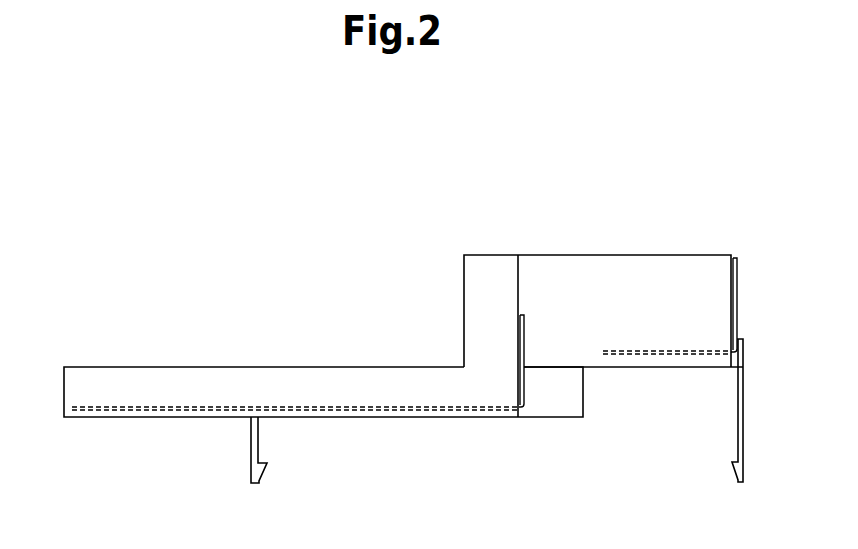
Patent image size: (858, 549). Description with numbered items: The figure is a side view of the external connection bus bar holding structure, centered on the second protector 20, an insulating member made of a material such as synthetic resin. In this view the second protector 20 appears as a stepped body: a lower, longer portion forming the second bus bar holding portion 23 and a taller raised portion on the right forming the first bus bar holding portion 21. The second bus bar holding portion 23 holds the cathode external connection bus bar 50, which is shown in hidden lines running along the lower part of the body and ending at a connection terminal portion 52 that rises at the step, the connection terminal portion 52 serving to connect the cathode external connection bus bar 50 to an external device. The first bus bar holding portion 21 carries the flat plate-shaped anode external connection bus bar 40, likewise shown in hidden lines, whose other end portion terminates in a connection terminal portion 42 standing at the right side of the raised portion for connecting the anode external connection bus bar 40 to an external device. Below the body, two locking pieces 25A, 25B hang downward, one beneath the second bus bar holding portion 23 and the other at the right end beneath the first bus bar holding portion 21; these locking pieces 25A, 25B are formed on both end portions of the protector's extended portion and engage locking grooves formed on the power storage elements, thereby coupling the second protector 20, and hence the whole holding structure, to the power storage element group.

The second protector 20 is at (484, 250).
The first bus bar holding portion 21 is at (650, 253).
The second bus bar holding portion 23 is at (155, 367).
The connection terminal portion 52 is at (524, 350).
The connection terminal portion 42 is at (737, 298).
The cathode external connection bus bar 50 is at (360, 405).
The anode external connection bus bar 40 is at (666, 353).
The locking piece 25A is at (251, 445).
The locking piece 25B is at (743, 410).